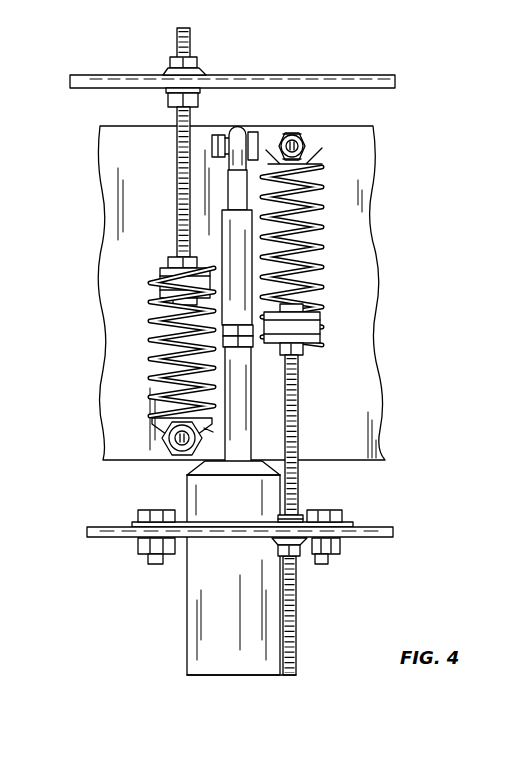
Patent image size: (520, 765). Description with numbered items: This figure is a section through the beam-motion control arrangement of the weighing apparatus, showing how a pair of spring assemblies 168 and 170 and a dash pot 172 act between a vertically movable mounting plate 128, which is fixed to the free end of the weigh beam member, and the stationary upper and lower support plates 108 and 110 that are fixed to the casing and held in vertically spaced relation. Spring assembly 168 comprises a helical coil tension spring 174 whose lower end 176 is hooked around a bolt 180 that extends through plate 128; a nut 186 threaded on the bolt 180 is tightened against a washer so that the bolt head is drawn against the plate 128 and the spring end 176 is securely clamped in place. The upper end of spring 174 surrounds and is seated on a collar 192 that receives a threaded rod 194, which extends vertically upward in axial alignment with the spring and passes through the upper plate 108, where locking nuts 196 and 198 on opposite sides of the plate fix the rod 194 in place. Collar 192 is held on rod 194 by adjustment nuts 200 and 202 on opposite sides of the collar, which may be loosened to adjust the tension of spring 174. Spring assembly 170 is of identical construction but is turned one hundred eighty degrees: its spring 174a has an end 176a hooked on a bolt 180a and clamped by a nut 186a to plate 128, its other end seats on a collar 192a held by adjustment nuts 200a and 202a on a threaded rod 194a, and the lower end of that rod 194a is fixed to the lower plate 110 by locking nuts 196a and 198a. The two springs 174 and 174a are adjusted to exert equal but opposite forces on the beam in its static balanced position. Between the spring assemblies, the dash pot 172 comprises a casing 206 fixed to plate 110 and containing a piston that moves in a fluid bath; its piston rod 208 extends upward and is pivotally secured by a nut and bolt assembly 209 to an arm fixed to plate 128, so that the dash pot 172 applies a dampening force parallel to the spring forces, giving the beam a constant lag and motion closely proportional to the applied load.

The upper support plate 108 is at (93, 88).
The lower support plate 110 is at (100, 538).
The mounting plate 128 is at (364, 188).
The spring assembly 168 is at (152, 328).
The spring assembly 170 is at (332, 283).
The dash pot 172 is at (180, 645).
The helical coil tension spring 174 is at (160, 376).
The helical coil tension spring 174a is at (313, 230).
The lower end of spring 176 is at (161, 427).
The end of spring 176a is at (324, 160).
The bolt 180 is at (194, 473).
The bolt 180a is at (299, 146).
The nut 186 is at (172, 461).
The nut 186a is at (285, 131).
The collar 192 is at (165, 273).
The collar 192a is at (318, 329).
The threaded rod 194 is at (180, 196).
The threaded rod 194a is at (294, 389).
The locking nut 196 is at (198, 67).
The locking nut 196a is at (302, 553).
The locking nut 198 is at (200, 96).
The locking nut 198a is at (302, 520).
The adjustment nut 200 is at (177, 256).
The adjustment nut 200a is at (305, 352).
The adjustment nut 202 is at (172, 308).
The adjustment nut 202a is at (316, 312).
The casing 206 is at (288, 662).
The piston rod 208 is at (238, 417).
The nut and bolt assembly 209 is at (208, 146).